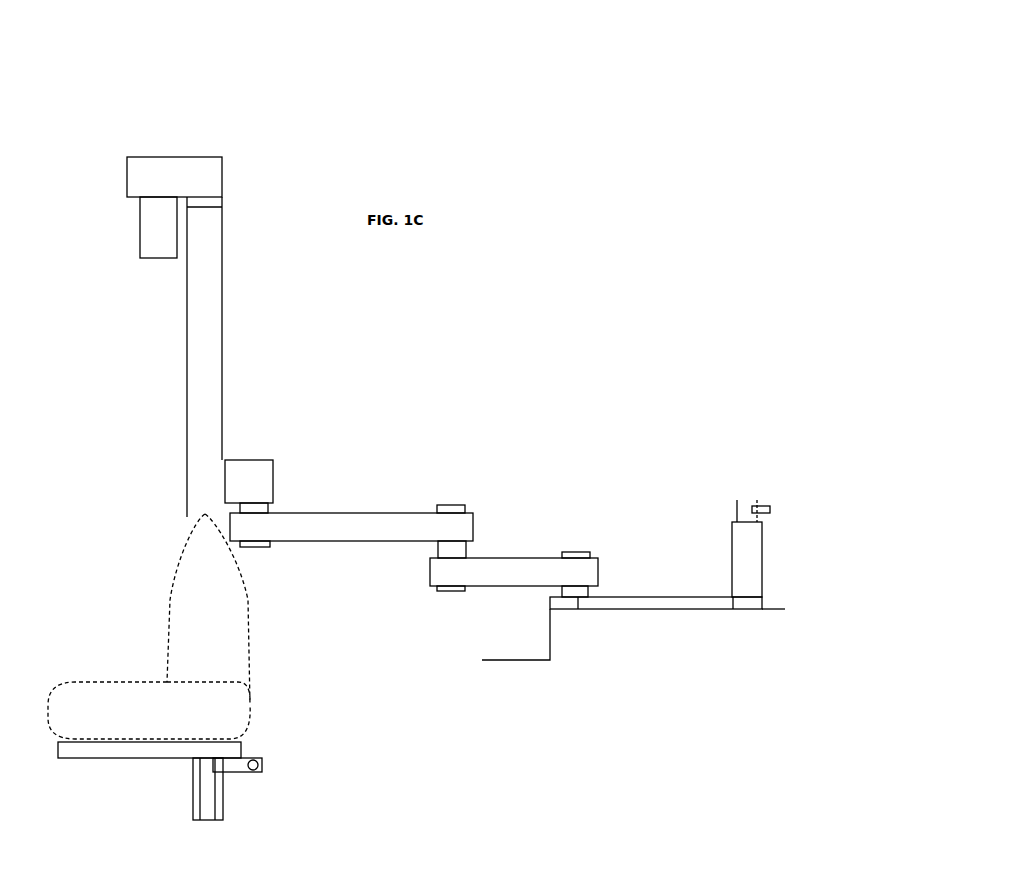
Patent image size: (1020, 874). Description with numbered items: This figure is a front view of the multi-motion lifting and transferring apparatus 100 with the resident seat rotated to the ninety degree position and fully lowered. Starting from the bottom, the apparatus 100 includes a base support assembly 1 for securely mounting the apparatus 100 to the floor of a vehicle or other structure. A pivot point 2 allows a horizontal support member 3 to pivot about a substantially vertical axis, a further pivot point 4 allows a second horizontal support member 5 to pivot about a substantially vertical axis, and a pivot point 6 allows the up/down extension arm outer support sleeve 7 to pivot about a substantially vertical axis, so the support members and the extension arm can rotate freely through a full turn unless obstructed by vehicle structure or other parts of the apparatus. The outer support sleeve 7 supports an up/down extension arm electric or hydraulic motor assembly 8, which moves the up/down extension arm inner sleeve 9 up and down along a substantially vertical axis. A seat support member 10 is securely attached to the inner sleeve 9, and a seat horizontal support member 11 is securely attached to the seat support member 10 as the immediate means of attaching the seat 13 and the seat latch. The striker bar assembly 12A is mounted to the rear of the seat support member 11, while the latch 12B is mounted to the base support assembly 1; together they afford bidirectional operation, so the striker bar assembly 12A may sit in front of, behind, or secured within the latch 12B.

The multi-motion lifting and transferring apparatus 100 is at (588, 199).
The base support assembly 1 is at (543, 617).
The pivot point 2 is at (568, 589).
The horizontal support member 3 is at (590, 576).
The pivot point 4 is at (448, 553).
The horizontal support member 5 is at (306, 536).
The pivot point 6 is at (262, 507).
The up/down extension arm outer support sleeve 7 is at (246, 485).
The up/down extension arm electric or hydraulic motor assembly 8 is at (143, 178).
The up/down extension arm inner sleeve 9 is at (222, 796).
The seat support member 10 is at (206, 797).
The seat horizontal support member 11 is at (75, 752).
The striker bar assembly 12A is at (235, 763).
The latch 12B is at (746, 505).
The seat 13 is at (220, 631).